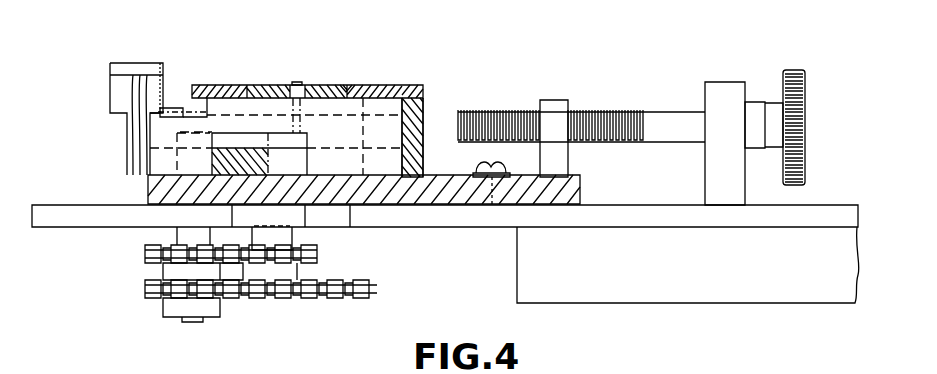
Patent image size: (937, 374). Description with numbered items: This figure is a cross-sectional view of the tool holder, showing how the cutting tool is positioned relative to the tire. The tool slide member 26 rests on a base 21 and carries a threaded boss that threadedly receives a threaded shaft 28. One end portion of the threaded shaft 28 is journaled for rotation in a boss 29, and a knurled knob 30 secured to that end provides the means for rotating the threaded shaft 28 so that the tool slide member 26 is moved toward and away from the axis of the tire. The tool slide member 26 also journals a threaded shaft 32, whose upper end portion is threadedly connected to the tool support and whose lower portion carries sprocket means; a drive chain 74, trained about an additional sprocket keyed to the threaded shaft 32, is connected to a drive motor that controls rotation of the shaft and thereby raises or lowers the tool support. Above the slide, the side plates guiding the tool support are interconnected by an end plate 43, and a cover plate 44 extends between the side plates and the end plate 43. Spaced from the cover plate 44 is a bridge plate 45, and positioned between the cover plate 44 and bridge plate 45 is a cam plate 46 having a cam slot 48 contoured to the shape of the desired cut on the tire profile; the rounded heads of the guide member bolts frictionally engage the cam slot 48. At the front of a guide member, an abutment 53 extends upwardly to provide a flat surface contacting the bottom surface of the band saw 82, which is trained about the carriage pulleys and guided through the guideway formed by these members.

The base plate 21 is at (818, 215).
The tool slide member 26 is at (580, 185).
The threaded shaft 28 is at (622, 110).
The boss 29 is at (727, 88).
The knurled knob 30 is at (817, 102).
The threaded shaft 32 is at (168, 232).
The end plate 43 is at (423, 112).
The cover plate 44 is at (405, 88).
The bridge plate 45 is at (233, 88).
The cam plate 46 is at (328, 88).
The cam slot 48 is at (297, 83).
The abutment 53 is at (170, 107).
The drive chain 74 is at (327, 283).
The band saw 82 is at (110, 90).